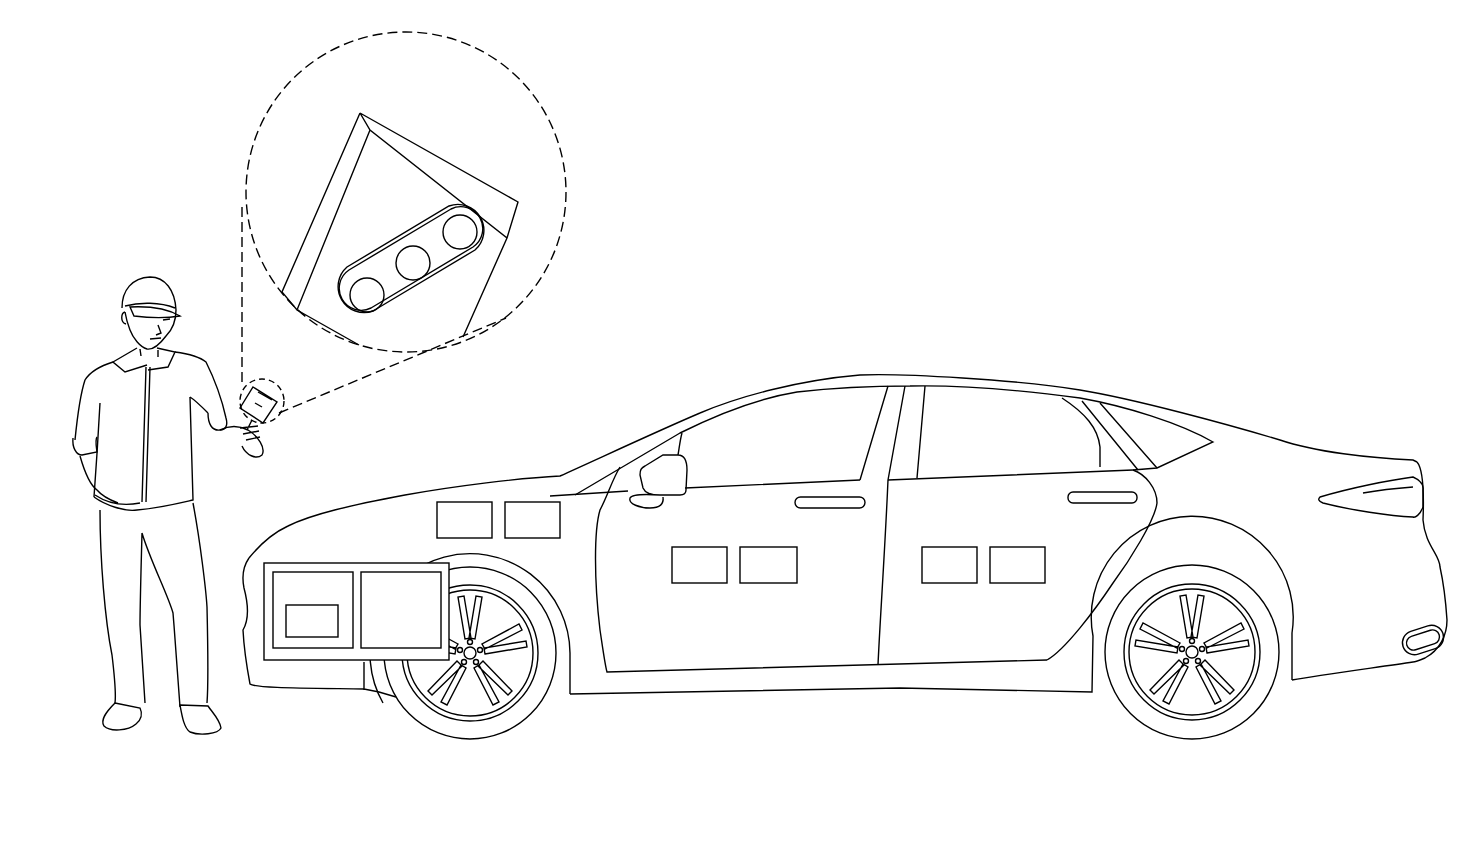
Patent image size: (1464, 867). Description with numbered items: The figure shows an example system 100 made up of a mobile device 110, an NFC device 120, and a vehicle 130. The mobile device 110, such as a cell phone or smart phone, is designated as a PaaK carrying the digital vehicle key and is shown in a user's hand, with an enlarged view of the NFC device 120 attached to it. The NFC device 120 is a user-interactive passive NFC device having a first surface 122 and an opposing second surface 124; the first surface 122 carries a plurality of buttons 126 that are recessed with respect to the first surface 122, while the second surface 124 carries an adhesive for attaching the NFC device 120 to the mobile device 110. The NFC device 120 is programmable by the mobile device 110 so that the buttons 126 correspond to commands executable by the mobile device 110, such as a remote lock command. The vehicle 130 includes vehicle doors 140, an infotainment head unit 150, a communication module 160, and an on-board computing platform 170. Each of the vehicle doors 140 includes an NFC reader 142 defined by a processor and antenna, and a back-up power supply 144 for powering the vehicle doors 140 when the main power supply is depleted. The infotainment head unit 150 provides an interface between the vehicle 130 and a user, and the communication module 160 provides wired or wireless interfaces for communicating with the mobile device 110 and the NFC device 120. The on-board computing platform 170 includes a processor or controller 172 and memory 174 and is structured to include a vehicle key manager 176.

The system 100 is at (1198, 189).
The mobile device 110 is at (340, 188).
The NFC device 120 is at (442, 207).
The first surface 122 is at (480, 223).
The second surface 124 is at (402, 237).
The buttons 126 is at (368, 298).
The vehicle 130 is at (1180, 408).
The vehicle doors 140 is at (795, 388).
The NFC reader 142 is at (750, 575).
The back-up power supply 144 is at (681, 575).
The infotainment head unit 150 is at (446, 531).
The communication module 160 is at (514, 531).
The on-board computing platform 170 is at (337, 562).
The processor or controller 172 is at (398, 650).
The memory 174 is at (312, 650).
The vehicle key manager 176 is at (295, 634).